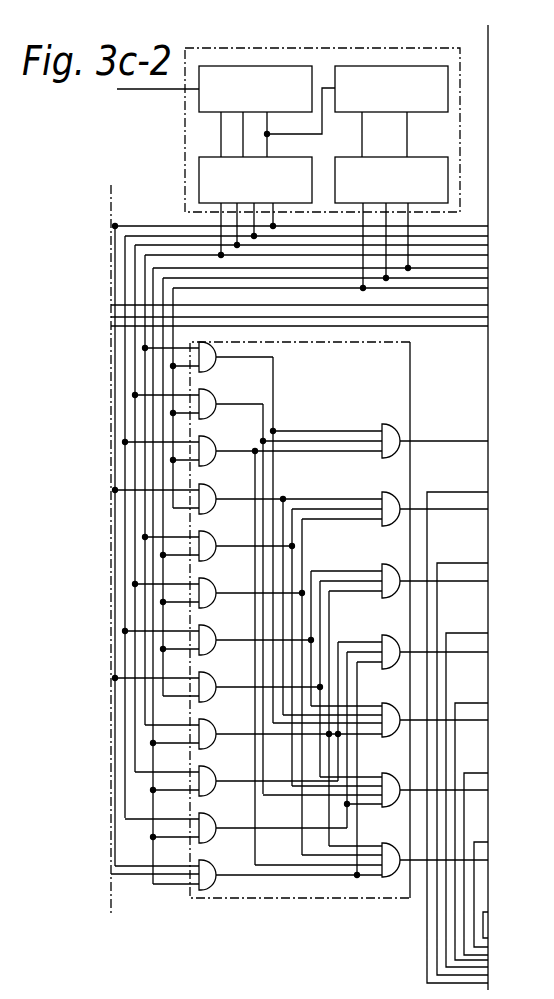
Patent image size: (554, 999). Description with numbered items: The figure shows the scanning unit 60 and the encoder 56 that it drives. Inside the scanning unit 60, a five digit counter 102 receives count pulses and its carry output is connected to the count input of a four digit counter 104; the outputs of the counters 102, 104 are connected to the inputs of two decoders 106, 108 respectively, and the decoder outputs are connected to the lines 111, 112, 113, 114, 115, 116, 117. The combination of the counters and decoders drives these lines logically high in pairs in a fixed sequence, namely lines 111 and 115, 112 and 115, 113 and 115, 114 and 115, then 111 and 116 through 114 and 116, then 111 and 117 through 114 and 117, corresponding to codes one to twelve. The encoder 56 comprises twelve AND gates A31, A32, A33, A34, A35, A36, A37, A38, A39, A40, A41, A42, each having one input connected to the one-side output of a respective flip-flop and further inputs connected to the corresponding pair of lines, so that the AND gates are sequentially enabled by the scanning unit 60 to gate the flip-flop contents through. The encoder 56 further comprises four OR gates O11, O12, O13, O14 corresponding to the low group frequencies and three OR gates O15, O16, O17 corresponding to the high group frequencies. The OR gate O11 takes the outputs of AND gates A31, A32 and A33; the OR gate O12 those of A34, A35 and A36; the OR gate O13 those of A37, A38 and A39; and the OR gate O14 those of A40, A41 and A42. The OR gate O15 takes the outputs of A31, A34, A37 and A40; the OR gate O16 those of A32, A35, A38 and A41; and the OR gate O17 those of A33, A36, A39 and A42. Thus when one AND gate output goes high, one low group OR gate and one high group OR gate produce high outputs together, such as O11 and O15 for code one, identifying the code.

The scanning unit 60 is at (380, 48).
The 5 digit counter 102 is at (260, 66).
The 4 digit counter 104 is at (448, 92).
The decoder 106 is at (199, 157).
The decoder 108 is at (448, 181).
The line 111 is at (143, 253).
The line 112 is at (157, 246).
The line 113 is at (171, 236).
The line 114 is at (185, 226).
The line 115 is at (282, 288).
The line 116 is at (313, 278).
The line 117 is at (333, 268).
The encoder 56 is at (410, 365).
The AND gate A31 is at (214, 350).
The AND gate A32 is at (212, 391).
The AND gate A33 is at (220, 429).
The AND gate A34 is at (220, 477).
The AND gate A35 is at (220, 524).
The AND gate A36 is at (220, 571).
The AND gate A37 is at (220, 618).
The AND gate A38 is at (220, 665).
The AND gate A39 is at (220, 712).
The AND gate A40 is at (220, 759).
The AND gate A41 is at (220, 806).
The AND gate A42 is at (220, 853).
The OR gate O11 is at (405, 416).
The OR gate O12 is at (405, 484).
The OR gate O13 is at (405, 556).
The OR gate O14 is at (405, 627).
The OR gate O15 is at (405, 695).
The OR gate O16 is at (405, 765).
The OR gate O17 is at (405, 835).